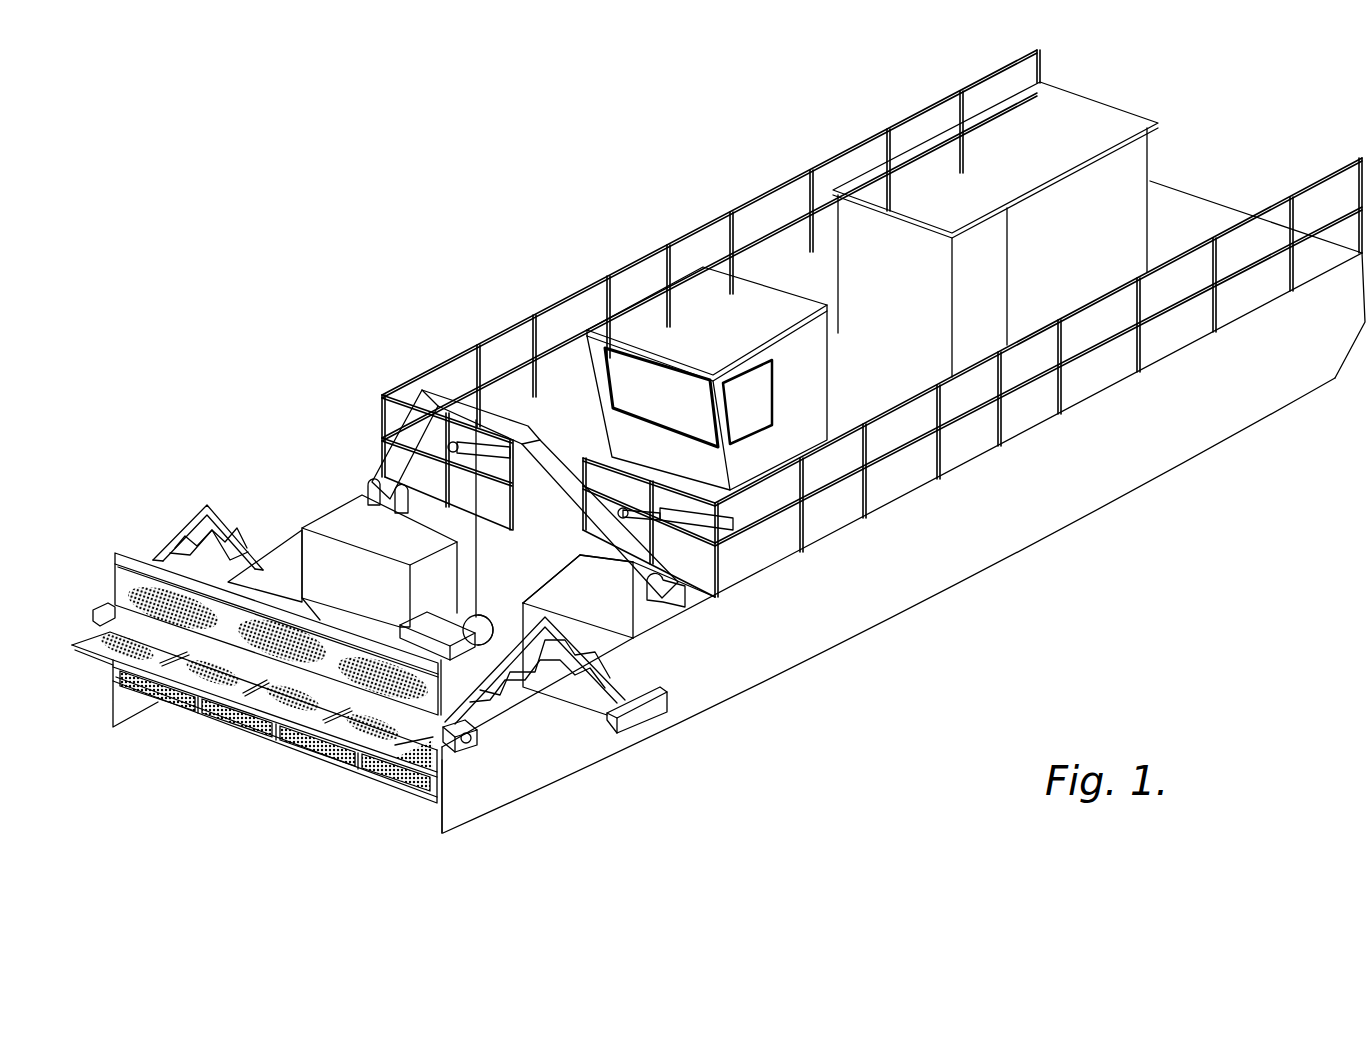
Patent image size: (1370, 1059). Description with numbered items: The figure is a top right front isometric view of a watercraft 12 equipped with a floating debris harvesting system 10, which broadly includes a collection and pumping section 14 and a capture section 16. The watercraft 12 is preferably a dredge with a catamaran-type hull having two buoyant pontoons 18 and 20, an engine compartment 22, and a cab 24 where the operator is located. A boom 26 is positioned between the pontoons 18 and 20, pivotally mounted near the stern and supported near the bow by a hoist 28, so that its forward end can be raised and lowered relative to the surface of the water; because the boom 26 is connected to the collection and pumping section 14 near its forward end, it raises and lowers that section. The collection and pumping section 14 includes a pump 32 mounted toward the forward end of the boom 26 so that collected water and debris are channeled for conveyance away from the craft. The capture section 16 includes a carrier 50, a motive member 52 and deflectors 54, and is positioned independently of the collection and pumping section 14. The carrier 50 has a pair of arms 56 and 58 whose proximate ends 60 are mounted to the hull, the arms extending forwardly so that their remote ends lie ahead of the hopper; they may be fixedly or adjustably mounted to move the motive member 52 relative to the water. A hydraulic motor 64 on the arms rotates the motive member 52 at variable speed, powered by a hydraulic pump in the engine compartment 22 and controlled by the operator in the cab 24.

The floating debris harvesting system 10 is at (312, 765).
The watercraft 12 is at (918, 607).
The collection and pumping section 14 is at (407, 613).
The capture section 16 is at (413, 812).
The pontoon 18 is at (345, 517).
The pontoon 20 is at (793, 650).
The engine compartment 22 is at (1100, 97).
The cab 24 is at (700, 280).
The boom 26 is at (505, 620).
The hoist 28 is at (430, 393).
The pump 32 is at (432, 627).
The carrier 50 is at (158, 545).
The motive member 52 is at (195, 700).
The deflectors 54 is at (297, 567).
The arm 56 is at (190, 513).
The arm 58 is at (615, 680).
The proximate ends 60 is at (633, 722).
The hydraulic motor 64 is at (462, 740).